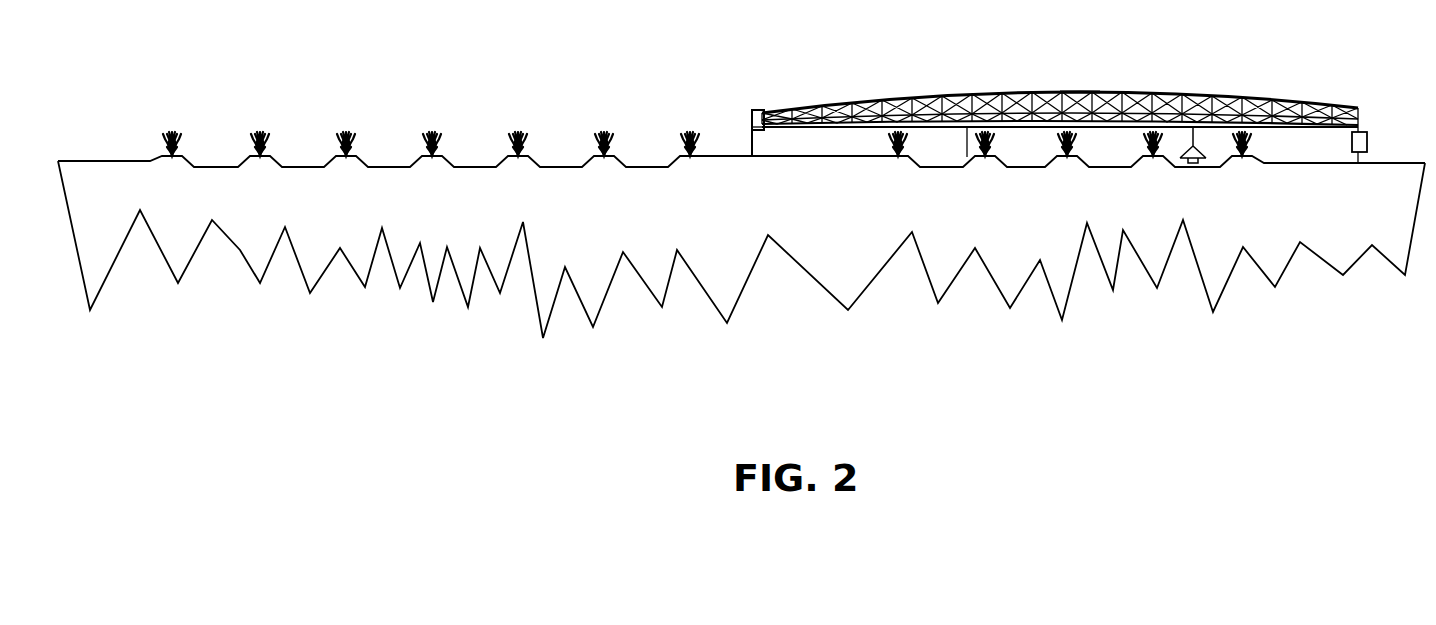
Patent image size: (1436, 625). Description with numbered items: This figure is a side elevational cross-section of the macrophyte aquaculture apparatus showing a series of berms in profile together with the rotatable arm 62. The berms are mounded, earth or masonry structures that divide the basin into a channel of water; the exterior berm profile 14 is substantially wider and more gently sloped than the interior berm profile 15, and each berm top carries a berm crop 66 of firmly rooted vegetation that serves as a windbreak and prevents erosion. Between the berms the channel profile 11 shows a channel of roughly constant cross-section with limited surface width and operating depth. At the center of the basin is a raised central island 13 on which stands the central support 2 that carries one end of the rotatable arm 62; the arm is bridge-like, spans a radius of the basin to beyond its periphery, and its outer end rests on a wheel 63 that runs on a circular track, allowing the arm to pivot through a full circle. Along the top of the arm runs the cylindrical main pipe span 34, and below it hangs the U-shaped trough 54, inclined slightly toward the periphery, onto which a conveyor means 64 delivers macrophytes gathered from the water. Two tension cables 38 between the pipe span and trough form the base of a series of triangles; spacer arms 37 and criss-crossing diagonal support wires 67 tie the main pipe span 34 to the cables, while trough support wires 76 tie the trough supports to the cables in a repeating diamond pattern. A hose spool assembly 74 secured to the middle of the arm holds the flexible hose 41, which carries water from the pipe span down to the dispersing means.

The central support 2 is at (747, 112).
The channel profile 11 is at (479, 166).
The central island 13 is at (785, 160).
The exterior berm profile 14 is at (164, 157).
The interior berm profile 15 is at (337, 154).
The main pipe span 34 is at (807, 96).
The spacer arm 37 is at (877, 103).
The tension cable 38 is at (953, 100).
The flexible hose 41 is at (1117, 128).
The trough 54 is at (967, 130).
The rotatable arm 62 is at (1054, 78).
The wheel 63 is at (1369, 158).
The conveyor means 64 is at (1205, 147).
The berm crop 66 is at (600, 136).
The diagonal support wire 67 is at (1023, 93).
The hose spool assembly 74 is at (1082, 95).
The trough support wire 76 is at (973, 95).